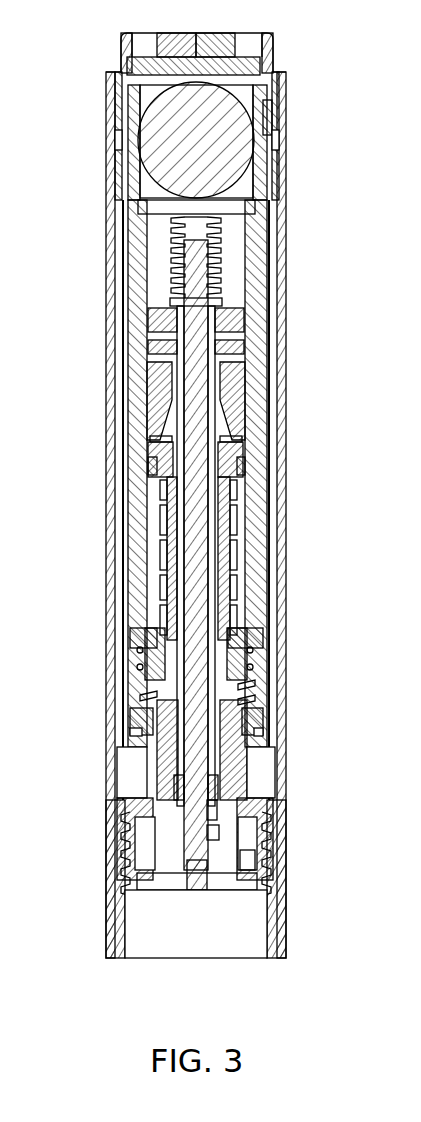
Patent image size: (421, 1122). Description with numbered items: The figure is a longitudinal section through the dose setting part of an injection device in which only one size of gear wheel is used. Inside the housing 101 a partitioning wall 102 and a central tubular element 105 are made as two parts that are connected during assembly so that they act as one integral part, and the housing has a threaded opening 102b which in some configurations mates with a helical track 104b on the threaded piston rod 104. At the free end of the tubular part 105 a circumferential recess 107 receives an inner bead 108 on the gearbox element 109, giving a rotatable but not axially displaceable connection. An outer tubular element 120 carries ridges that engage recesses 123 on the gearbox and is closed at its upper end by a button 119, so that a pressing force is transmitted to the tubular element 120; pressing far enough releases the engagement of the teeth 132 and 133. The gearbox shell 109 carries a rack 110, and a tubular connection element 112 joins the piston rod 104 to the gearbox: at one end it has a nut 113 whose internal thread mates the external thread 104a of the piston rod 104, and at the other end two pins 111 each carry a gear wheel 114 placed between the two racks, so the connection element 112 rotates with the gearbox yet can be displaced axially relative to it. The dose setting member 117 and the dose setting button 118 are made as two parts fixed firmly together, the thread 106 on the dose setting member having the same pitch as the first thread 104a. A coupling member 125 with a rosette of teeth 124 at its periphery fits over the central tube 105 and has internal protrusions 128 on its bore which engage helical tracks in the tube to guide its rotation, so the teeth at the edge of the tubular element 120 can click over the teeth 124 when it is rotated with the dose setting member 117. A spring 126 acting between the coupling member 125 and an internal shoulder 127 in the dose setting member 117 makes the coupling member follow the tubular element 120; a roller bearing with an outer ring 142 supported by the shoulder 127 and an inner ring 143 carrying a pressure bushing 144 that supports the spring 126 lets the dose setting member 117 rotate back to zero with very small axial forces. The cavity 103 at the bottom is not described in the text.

The housing 101 is at (283, 540).
The partitioning wall 102 is at (262, 800).
The threaded opening 102b is at (250, 862).
The outlet cavity 103 is at (225, 925).
The piston rod 104 is at (206, 597).
The external thread 104a is at (215, 806).
The helical track 104b is at (214, 835).
The tubular element 105 is at (225, 745).
The thread 106 is at (232, 517).
The circumferential recess 107 is at (240, 472).
The inner bead 108 is at (240, 458).
The gearbox element 109 is at (243, 410).
The rack 110 is at (237, 262).
The pins 111 is at (238, 323).
The tubular connection element 112 is at (177, 593).
The nut 113 is at (233, 780).
The gear wheel 114 is at (240, 350).
The dose setting member 117 is at (117, 432).
The dose setting button 118 is at (108, 108).
The button 119 is at (278, 33).
The tubular element 120 is at (258, 236).
The recesses 123 is at (243, 382).
The teeth 124 is at (230, 583).
The coupling member 125 is at (243, 668).
The spring 126 is at (250, 683).
The internal shoulder 127 is at (118, 748).
The internal protrusions 128 is at (240, 640).
The teeth 132 is at (276, 142).
The teeth 133 is at (268, 128).
The outer ring 142 is at (130, 713).
The inner ring 143 is at (130, 736).
The pressure bushing 144 is at (140, 697).